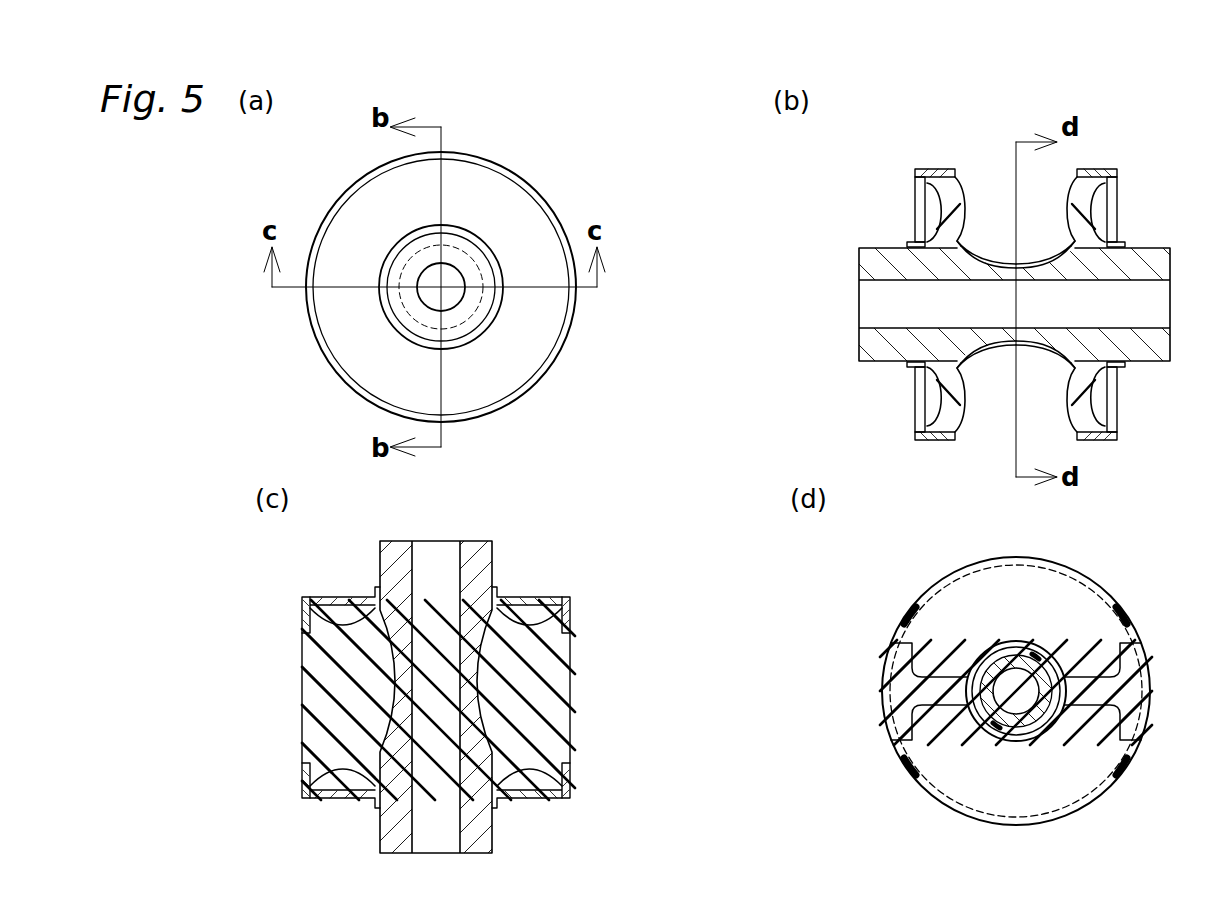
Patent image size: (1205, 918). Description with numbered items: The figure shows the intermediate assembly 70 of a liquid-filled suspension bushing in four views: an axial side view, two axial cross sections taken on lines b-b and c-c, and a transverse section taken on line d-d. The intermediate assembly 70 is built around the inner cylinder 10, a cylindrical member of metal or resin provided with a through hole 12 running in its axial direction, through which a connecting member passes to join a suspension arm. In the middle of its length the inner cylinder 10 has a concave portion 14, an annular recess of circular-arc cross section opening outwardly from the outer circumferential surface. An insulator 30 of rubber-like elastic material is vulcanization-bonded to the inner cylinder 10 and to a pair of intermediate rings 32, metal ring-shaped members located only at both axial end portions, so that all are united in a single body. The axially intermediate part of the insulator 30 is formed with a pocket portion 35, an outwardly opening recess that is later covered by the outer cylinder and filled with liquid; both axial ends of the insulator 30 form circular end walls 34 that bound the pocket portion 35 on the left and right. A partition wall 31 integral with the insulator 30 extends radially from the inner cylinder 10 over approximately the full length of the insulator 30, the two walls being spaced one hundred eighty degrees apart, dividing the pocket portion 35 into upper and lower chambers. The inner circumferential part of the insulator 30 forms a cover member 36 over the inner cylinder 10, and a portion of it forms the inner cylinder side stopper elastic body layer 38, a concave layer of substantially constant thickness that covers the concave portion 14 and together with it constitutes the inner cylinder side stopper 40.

The inner cylinder 10 is at (860, 259).
The through hole 12 is at (392, 325).
The concave portion 14 is at (998, 357).
The insulator 30 is at (544, 174).
The partition wall 31 is at (310, 684).
The intermediate ring 32 is at (940, 168).
The end wall 34 is at (527, 243).
The pocket portion 35 is at (1000, 167).
The cover member 36 is at (1113, 240).
The inner cylinder side stopper elastic body layer 38 is at (1022, 355).
The inner cylinder side stopper 40 is at (995, 241).
The intermediate assembly 70 is at (375, 152).